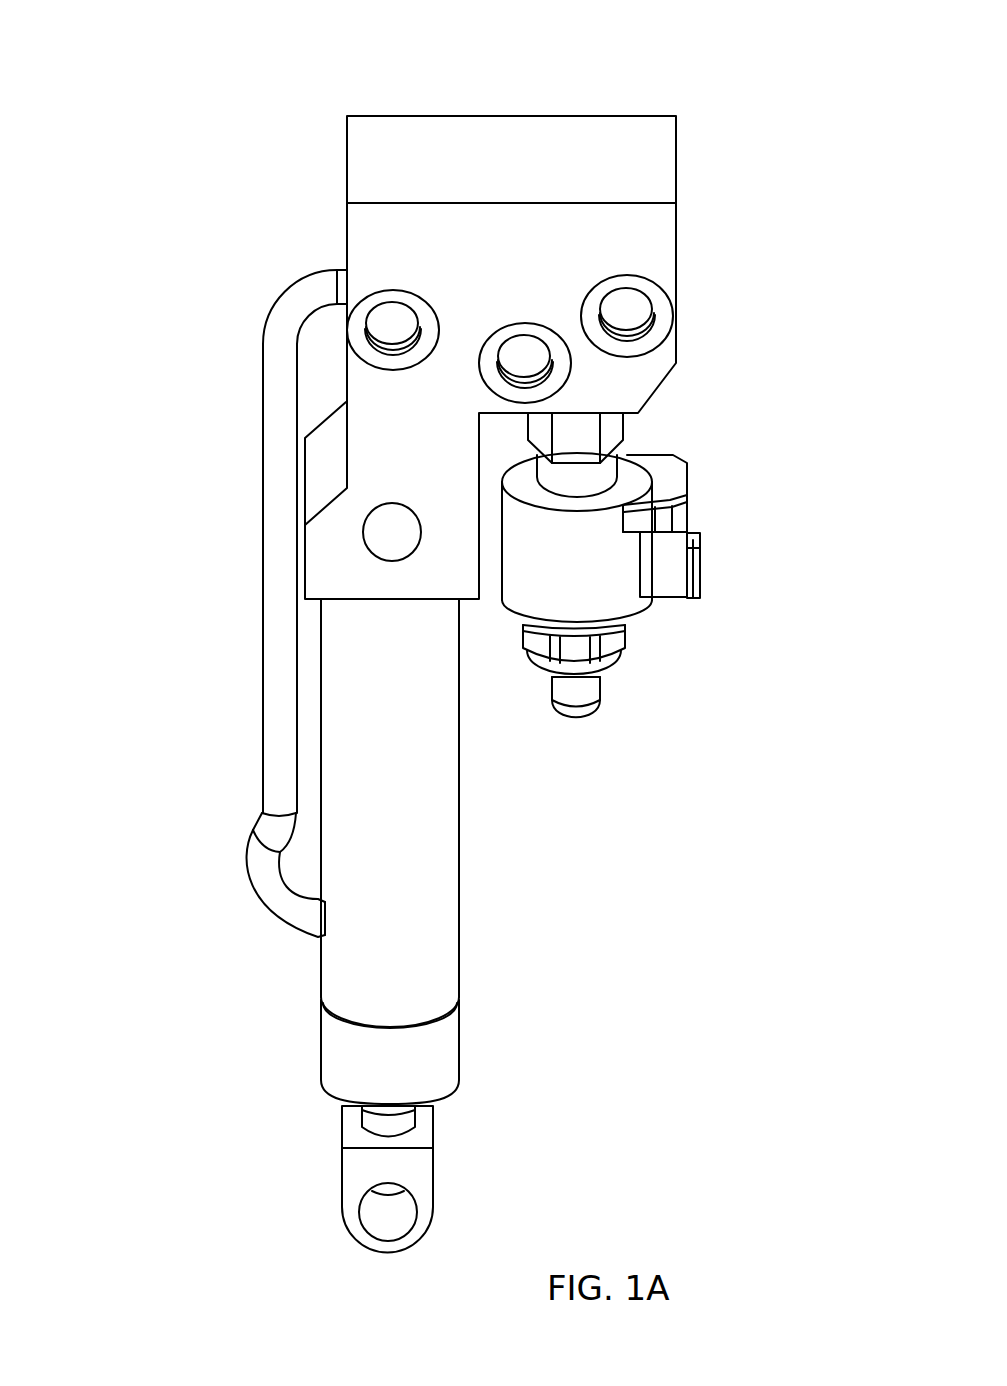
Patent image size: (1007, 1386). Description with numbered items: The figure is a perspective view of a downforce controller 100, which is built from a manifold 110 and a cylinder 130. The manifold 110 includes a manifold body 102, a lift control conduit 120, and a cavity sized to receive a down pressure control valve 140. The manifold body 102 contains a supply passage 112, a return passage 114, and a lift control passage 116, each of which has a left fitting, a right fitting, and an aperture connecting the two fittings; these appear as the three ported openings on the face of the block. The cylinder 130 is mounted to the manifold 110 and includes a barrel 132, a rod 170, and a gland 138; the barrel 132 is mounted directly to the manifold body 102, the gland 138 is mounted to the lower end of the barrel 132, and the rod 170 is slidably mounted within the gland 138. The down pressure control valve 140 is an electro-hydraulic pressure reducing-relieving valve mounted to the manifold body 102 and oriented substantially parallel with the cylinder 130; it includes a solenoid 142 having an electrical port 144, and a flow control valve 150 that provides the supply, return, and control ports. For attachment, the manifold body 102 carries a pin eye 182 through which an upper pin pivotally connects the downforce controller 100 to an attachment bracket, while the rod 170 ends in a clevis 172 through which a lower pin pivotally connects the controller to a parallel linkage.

The downforce controller 100 is at (44, 115).
The manifold body 102 is at (677, 224).
The manifold 110 is at (285, 153).
The supply passage 112 is at (662, 326).
The return passage 114 is at (527, 330).
The lift control passage 116 is at (392, 297).
The lift control conduit 120 is at (262, 459).
The cylinder 130 is at (644, 980).
The barrel 132 is at (458, 942).
The gland 138 is at (320, 1055).
The down pressure control valve 140 is at (657, 665).
The solenoid 142 is at (685, 494).
The electrical port 144 is at (700, 585).
The flow control valve 150 is at (625, 432).
The rod 170 is at (377, 1127).
The clevis 172 is at (393, 1215).
The pin eye 182 is at (388, 537).